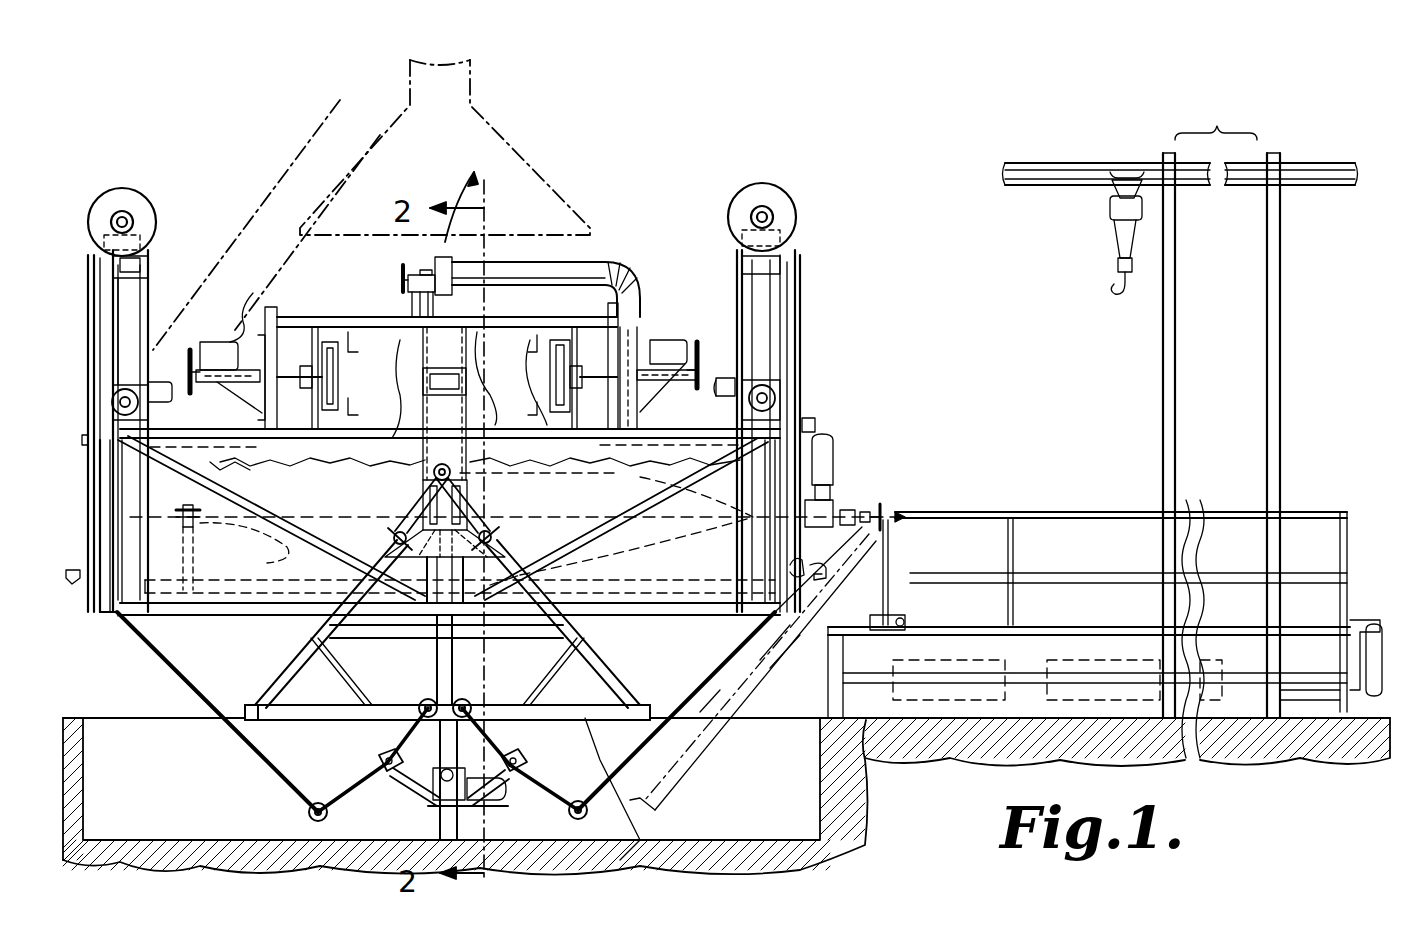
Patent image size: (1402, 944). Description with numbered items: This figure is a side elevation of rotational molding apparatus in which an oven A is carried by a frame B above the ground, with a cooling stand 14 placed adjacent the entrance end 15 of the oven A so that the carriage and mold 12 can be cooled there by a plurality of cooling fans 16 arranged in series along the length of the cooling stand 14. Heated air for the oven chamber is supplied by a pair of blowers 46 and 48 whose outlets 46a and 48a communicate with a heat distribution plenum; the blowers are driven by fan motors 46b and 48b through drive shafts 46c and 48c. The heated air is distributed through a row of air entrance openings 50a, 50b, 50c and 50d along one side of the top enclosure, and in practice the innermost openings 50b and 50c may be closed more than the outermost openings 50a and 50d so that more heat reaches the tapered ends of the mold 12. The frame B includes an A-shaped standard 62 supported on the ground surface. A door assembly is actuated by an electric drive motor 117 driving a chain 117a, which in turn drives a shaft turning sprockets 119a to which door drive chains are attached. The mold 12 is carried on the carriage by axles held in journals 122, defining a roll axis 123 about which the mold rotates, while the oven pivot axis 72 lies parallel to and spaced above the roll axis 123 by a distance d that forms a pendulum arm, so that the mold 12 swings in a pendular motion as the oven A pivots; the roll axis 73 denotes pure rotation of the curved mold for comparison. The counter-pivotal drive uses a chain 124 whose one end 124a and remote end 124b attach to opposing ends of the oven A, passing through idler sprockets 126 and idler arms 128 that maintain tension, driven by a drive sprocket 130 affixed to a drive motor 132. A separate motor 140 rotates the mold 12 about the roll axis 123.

The mold 12 is at (272, 565).
The cooling stand 14 is at (1085, 512).
The entrance end 15 is at (810, 600).
The cooling fans 16 is at (1015, 750).
The blower 46 is at (325, 388).
The outlet 46a is at (348, 370).
The fan motor 46b is at (255, 306).
The drive shaft 46c is at (205, 392).
The blower 48 is at (577, 338).
The outlet 48a is at (512, 345).
The fan motor 48b is at (668, 340).
The drive shaft 48c is at (704, 385).
The air entrance opening 50a is at (230, 468).
The air entrance opening 50b is at (315, 462).
The air entrance opening 50c is at (520, 458).
The air entrance opening 50d is at (672, 458).
The A-shaped standard 62 is at (600, 660).
The oven pivot axis 72 is at (515, 512).
The roll axis 73 is at (415, 535).
The electric drive motor 117 is at (165, 378).
The chain 117a is at (140, 287).
The sprocket 119a is at (125, 188).
The journal 122 is at (560, 815).
The roll axis 123 is at (670, 525).
The chain 124 is at (250, 760).
The one end of chain 124a is at (115, 616).
The remote end of chain 124b is at (770, 630).
The idler sprocket 126 is at (428, 698).
The idler arm 128 is at (406, 785).
The drive sprocket 130 is at (462, 805).
The drive motor 132 is at (528, 800).
The motor 140 is at (833, 460).
The oven A is at (698, 428).
The frame B is at (293, 660).
The distance d is at (410, 492).